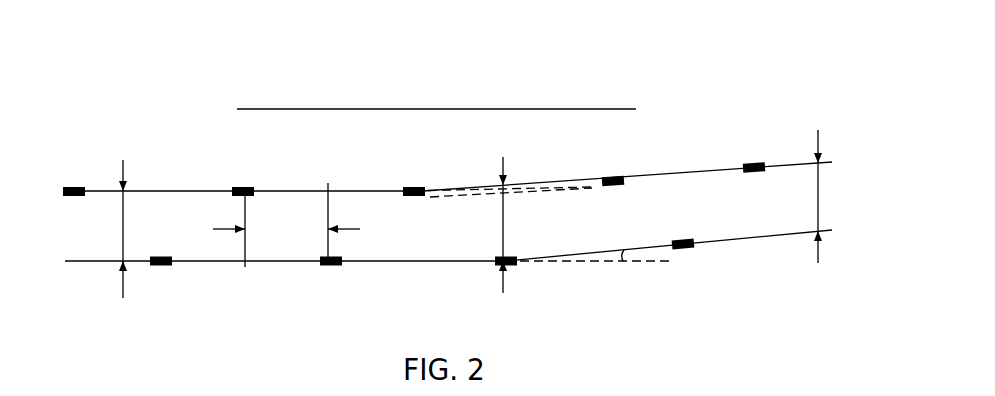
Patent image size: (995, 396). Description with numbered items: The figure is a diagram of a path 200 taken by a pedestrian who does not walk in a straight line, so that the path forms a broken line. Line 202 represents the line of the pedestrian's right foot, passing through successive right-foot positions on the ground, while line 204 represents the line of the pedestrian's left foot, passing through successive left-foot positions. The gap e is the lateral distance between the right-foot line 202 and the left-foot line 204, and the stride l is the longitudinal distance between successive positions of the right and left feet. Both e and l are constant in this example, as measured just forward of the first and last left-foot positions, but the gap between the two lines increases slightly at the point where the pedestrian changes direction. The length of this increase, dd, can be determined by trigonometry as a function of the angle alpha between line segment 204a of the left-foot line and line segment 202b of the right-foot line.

The path 200 is at (703, 51).
The line of the right foot 202 is at (427, 262).
The line segment of the right foot line 202b is at (757, 239).
The line of the left foot 204 is at (175, 191).
The line segment of the left foot line 204a is at (357, 191).